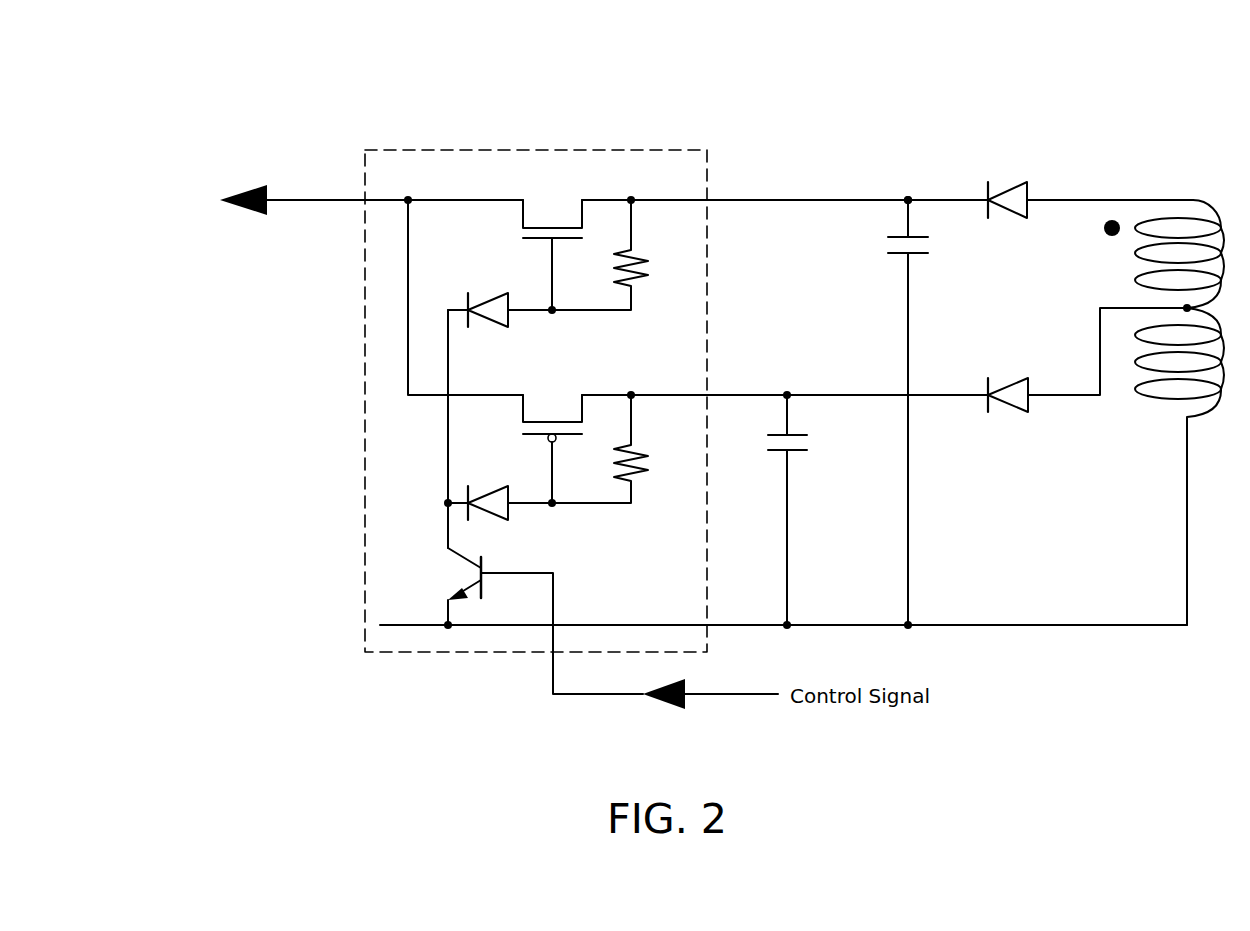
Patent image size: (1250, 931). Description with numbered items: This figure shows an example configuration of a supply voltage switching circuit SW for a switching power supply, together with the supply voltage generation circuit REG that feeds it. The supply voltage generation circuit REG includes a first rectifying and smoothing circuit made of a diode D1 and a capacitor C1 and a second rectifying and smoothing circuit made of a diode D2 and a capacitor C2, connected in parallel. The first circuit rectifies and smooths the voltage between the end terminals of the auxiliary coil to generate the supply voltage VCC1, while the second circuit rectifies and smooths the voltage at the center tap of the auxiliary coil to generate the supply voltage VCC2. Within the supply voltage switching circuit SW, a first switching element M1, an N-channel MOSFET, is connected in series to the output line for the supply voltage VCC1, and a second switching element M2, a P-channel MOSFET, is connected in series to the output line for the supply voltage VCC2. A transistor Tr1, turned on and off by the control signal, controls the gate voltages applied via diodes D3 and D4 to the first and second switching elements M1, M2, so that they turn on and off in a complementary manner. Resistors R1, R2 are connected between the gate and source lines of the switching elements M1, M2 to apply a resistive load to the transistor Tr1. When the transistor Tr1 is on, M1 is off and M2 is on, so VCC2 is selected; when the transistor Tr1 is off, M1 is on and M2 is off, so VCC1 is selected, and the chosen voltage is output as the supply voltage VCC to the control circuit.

The supply voltage switching circuit SW is at (581, 166).
The first switching element M1 is at (547, 240).
The second switching element M2 is at (547, 435).
The resistor R1 is at (623, 255).
The resistor R2 is at (623, 449).
The diode D1 is at (1031, 190).
The diode D2 is at (1031, 385).
The diode D3 is at (500, 296).
The diode D4 is at (500, 490).
The capacitor C1 is at (887, 412).
The capacitor C2 is at (811, 510).
The transistor Tr1 is at (543, 619).
The supply voltage generation circuit REG is at (906, 172).
The supply voltage VCC is at (244, 208).
The supply voltage VCC1 is at (798, 182).
The supply voltage VCC2 is at (884, 353).